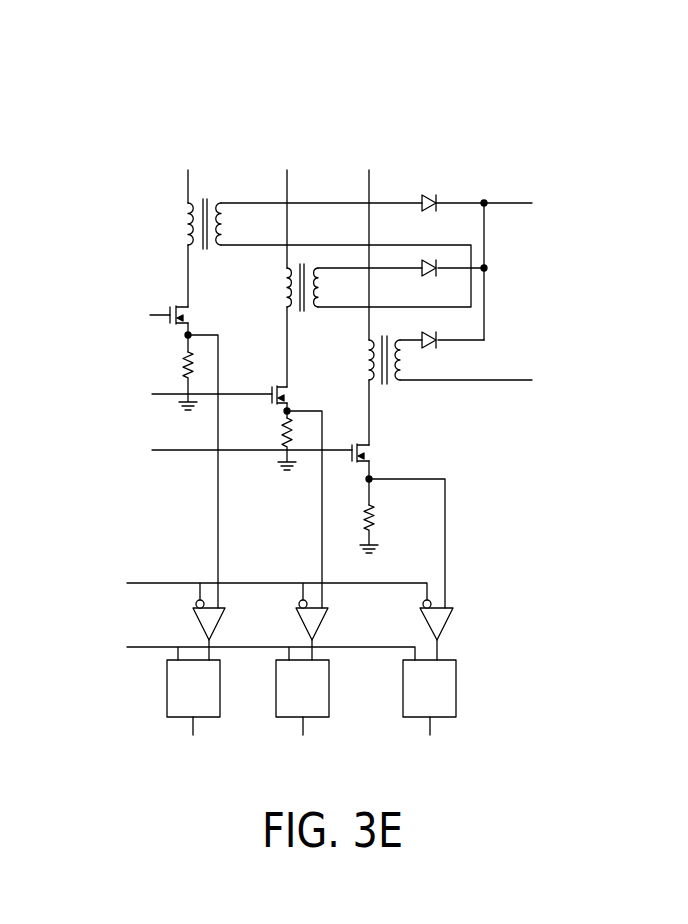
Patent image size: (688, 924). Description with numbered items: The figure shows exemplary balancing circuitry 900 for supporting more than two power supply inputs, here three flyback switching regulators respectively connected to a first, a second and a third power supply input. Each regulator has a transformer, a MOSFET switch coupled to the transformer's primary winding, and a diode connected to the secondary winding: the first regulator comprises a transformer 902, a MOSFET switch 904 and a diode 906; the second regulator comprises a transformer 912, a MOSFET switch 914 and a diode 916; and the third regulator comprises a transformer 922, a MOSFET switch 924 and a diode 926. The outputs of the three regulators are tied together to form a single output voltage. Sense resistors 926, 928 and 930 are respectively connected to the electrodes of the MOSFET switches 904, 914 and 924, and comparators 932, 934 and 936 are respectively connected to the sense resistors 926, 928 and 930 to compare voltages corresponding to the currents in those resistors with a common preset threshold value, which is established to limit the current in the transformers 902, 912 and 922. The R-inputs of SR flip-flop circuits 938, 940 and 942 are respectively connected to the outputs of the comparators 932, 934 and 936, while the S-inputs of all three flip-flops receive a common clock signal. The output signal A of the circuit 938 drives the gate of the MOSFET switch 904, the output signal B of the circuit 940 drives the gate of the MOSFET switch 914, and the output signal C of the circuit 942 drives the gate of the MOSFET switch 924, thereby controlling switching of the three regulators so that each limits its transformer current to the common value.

The balancing circuitry 900 is at (347, 98).
The transformer 902 is at (182, 221).
The MOSFET switch 904 is at (175, 302).
The diode 906 is at (428, 196).
The transformer 912 is at (302, 316).
The MOSFET switch 914 is at (272, 384).
The diode 916 is at (425, 276).
The transformer 922 is at (383, 386).
The MOSFET switch 924 is at (356, 440).
The diode / sense resistor 926 is at (182, 352).
The sense resistor 928 is at (280, 432).
The sense resistor 930 is at (378, 519).
The comparator 932 is at (200, 630).
The comparator 934 is at (328, 620).
The comparator 936 is at (453, 620).
The SR flip-flop circuit 938 is at (165, 687).
The SR flip-flop circuit 940 is at (330, 687).
The SR flip-flop circuit 942 is at (457, 687).